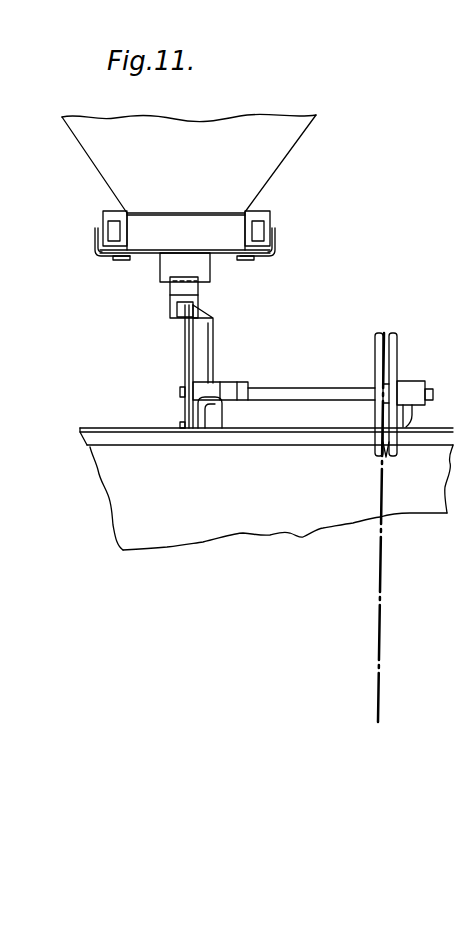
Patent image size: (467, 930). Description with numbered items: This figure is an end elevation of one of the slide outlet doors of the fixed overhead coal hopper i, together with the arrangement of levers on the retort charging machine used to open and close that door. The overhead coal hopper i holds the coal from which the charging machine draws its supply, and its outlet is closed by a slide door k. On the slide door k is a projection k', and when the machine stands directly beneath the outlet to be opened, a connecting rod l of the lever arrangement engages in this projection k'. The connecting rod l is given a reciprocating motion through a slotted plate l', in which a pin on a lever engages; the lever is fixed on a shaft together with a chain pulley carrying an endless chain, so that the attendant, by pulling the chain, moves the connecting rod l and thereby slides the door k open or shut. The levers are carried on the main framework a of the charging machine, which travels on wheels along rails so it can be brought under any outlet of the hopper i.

The fixed overhead coal hopper i is at (189, 183).
The outlet slide door k is at (185, 248).
The projection k' is at (201, 270).
The connecting rod l is at (167, 297).
The slotted plate l' is at (186, 366).
The main framework a is at (266, 489).